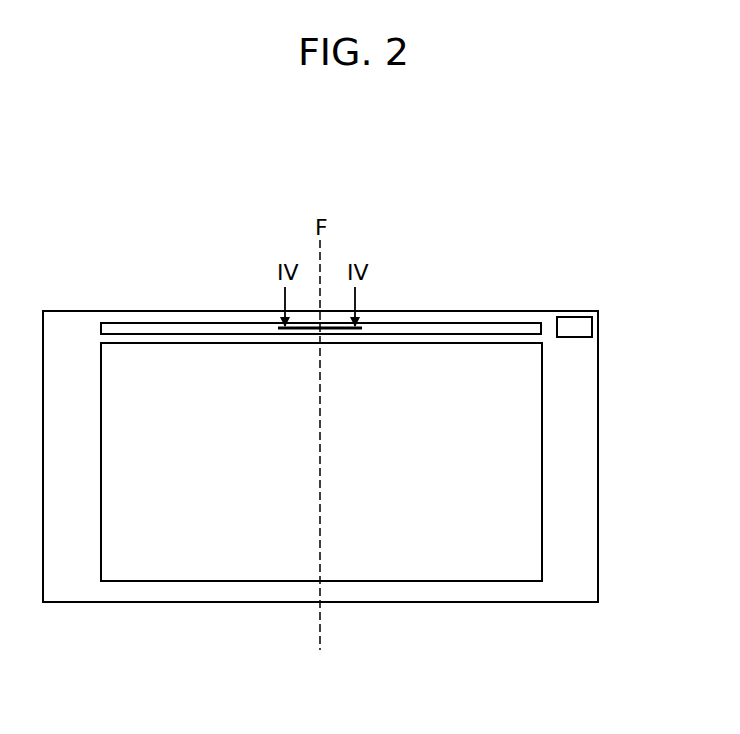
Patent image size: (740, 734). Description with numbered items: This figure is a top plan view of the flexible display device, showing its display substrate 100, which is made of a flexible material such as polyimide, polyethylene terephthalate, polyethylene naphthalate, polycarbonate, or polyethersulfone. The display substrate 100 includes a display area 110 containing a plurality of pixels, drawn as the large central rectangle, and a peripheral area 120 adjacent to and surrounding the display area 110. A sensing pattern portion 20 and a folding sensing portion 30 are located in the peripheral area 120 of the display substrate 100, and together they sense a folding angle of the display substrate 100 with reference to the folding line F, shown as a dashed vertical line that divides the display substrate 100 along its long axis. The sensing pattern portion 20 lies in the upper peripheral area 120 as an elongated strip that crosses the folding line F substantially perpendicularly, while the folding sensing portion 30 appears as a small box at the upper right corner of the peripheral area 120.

The display substrate 100 is at (542, 291).
The display area 110 is at (240, 581).
The peripheral area 120 is at (583, 521).
The sensing pattern portion 20 is at (185, 322).
The folding sensing portion 30 is at (578, 327).